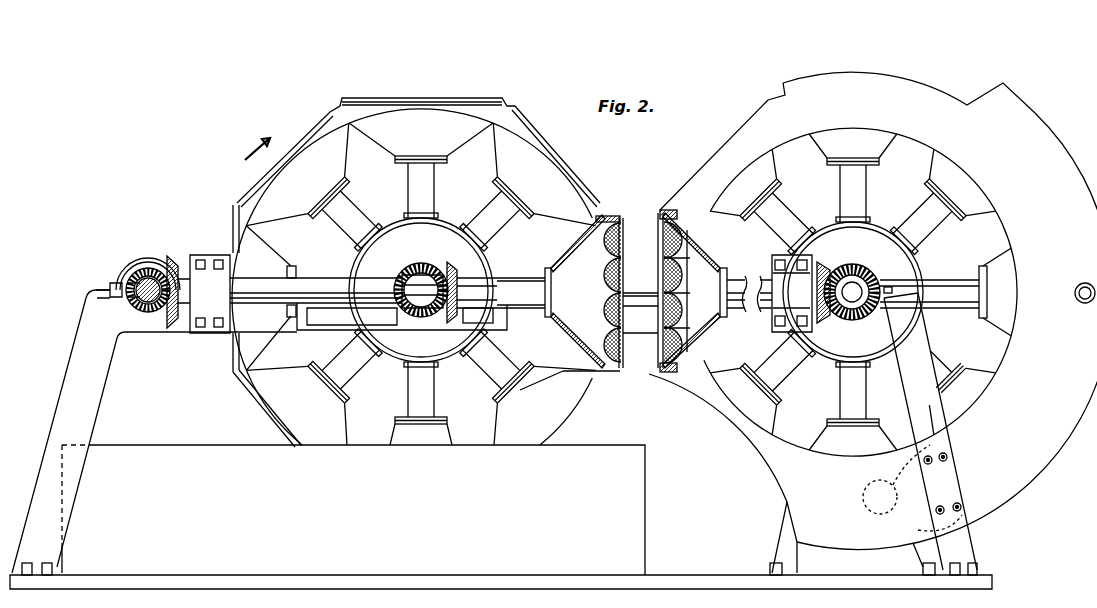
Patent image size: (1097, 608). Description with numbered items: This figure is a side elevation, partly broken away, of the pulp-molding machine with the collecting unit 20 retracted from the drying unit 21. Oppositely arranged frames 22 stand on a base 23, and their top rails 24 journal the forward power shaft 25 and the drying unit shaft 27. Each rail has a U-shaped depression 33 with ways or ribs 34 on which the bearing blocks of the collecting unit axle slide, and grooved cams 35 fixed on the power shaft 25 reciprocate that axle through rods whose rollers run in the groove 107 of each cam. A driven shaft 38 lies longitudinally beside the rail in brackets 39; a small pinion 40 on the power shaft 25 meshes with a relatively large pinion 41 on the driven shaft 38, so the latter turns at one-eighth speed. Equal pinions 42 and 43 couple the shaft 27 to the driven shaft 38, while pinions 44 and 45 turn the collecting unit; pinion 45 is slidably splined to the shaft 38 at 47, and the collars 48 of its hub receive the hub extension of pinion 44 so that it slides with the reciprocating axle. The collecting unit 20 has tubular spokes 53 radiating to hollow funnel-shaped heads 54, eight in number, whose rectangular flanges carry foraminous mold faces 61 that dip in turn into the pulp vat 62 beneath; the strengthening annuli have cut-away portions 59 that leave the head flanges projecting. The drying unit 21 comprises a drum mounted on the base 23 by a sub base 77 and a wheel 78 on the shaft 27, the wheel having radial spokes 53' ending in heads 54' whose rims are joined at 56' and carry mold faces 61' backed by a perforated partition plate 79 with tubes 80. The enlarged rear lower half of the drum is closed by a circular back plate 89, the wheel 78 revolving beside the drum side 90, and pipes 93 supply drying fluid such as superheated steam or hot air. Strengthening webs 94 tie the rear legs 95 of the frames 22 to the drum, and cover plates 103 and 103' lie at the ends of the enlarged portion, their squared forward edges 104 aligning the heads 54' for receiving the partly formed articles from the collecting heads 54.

The collecting unit 20 is at (418, 138).
The drying unit 21 is at (909, 83).
The frames 22 is at (154, 431).
The base 23 is at (693, 578).
The top rails 24 is at (640, 313).
The power shaft 25 is at (152, 308).
The drying unit shaft 27 is at (852, 283).
The U-shaped depression 33 is at (325, 333).
The ways or ribs 34 is at (505, 333).
The grooved cams 35 is at (112, 283).
The driven shaft 38 is at (312, 283).
The brackets 39 is at (213, 256).
The small pinion 40 is at (134, 305).
The large pinion 41 is at (176, 256).
The pinion 42 is at (872, 276).
The pinion 43 is at (833, 334).
The pinion 44 is at (422, 264).
The pinion 45 is at (458, 325).
The spline connection 47 is at (462, 282).
The collars 48 is at (402, 282).
The tubular spokes 53 is at (421, 187).
The radial spokes 53' is at (853, 190).
The funnel-shaped heads 54 is at (461, 316).
The heads 54' is at (765, 333).
The rim connection 56' is at (659, 273).
The cut-away portions 59 is at (333, 108).
The foraminous mold faces 61 is at (592, 292).
The foraminous mold faces 61' is at (655, 292).
The pulp tank or vat 62 is at (353, 510).
The sub base 77 is at (847, 537).
The drying wheel 78 is at (933, 282).
The perforated partition plate 79 is at (688, 292).
The tubes 80 is at (690, 328).
The circular back plate 89 is at (1035, 468).
The drum side 90 is at (920, 150).
The communicating pipes 93 is at (1074, 293).
The strengthening webs 94 is at (912, 488).
The rear legs 95 is at (930, 428).
The cover plate 103 is at (822, 71).
The cover plate 103' is at (723, 458).
The squared edge 104 is at (730, 150).
The cam groove 107 is at (146, 262).